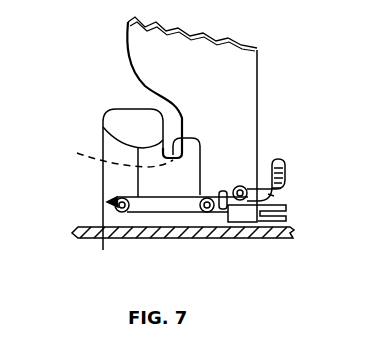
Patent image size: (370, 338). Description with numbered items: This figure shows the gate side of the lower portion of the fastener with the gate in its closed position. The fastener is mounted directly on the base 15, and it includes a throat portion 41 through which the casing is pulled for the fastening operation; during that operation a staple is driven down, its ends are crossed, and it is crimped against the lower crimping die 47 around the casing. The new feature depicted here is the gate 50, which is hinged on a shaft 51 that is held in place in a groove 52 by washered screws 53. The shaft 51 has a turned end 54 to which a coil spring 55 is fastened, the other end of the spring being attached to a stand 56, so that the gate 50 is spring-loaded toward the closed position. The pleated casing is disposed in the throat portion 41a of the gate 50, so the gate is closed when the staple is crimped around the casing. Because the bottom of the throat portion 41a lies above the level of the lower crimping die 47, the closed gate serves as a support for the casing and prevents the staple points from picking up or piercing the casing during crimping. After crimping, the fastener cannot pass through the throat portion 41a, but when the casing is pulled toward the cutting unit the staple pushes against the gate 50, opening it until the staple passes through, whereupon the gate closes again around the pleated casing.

The base 15 is at (102, 250).
The throat portion 41 is at (158, 104).
The throat portion of gate 41a is at (103, 127).
The lower crimping die 47 is at (111, 154).
The gate 50 is at (148, 178).
The shaft 51 is at (172, 212).
The groove 52 is at (107, 202).
The washered screws 53 is at (128, 211).
The turned end 54 is at (285, 156).
The coil spring 55 is at (288, 190).
The stand 56 is at (247, 99).